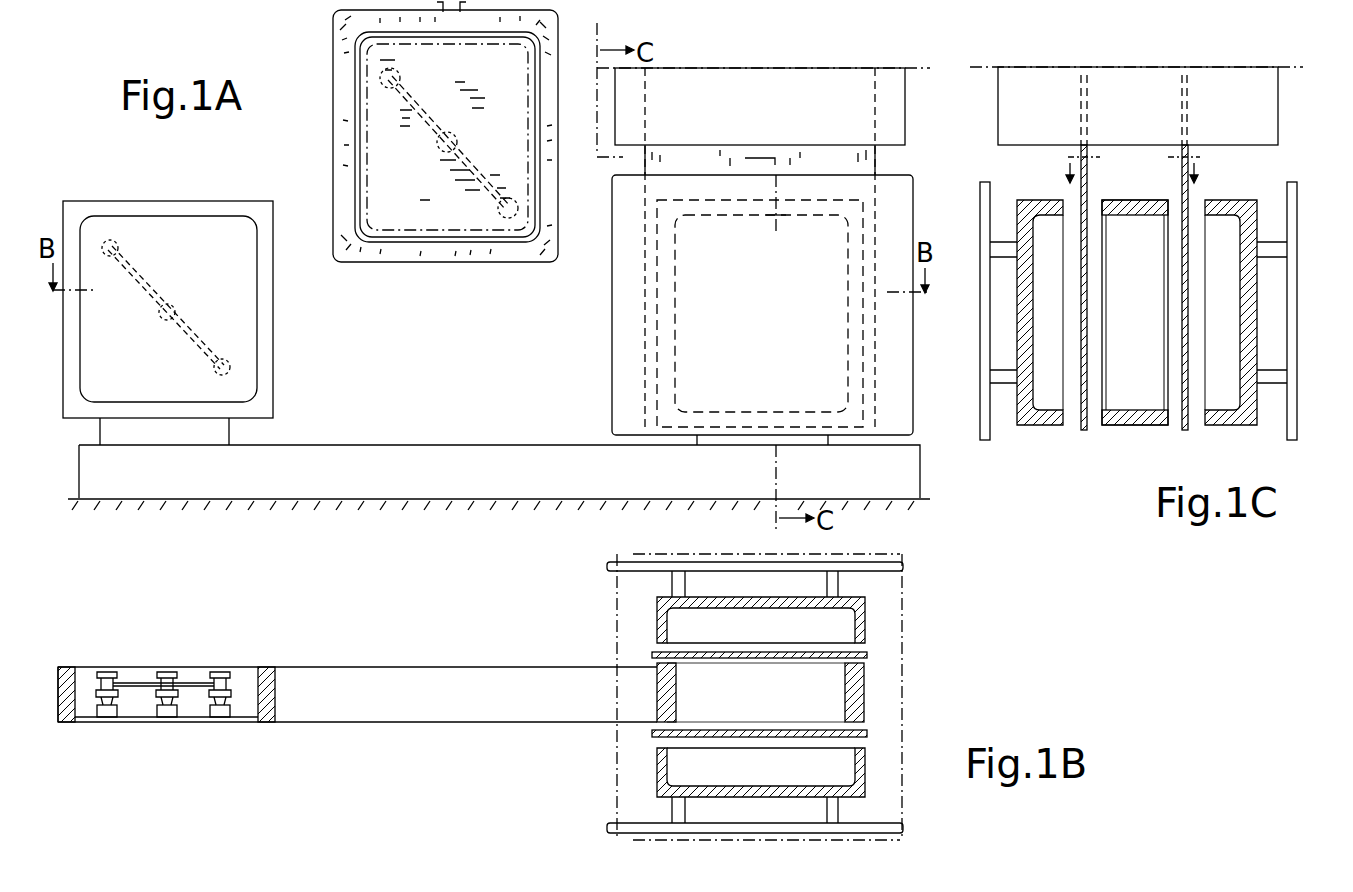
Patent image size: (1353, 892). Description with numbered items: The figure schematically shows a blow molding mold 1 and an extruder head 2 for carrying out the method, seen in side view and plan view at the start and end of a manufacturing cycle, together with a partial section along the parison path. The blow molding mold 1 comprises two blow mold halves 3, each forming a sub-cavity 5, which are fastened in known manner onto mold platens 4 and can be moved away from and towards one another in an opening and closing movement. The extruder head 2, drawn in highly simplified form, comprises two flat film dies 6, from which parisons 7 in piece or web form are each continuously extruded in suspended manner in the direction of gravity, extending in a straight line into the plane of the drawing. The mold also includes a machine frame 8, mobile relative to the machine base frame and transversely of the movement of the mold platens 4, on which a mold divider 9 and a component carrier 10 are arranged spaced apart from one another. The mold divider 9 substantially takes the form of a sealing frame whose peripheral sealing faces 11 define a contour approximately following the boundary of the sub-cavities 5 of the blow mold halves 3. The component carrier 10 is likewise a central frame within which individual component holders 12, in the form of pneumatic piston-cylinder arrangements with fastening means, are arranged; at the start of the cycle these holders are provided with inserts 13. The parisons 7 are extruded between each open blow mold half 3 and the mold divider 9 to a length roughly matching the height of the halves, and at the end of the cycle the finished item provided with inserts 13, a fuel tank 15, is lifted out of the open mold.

In FIG. 1A, the blow molding mold 1 is at (472, 517).
In FIG. 1A, the extruder head 2 is at (838, 92).
In FIG. 1C, the extruder head 2 is at (1228, 85).
In FIG. 1A, the blow mold halves 3 is at (902, 398).
In FIG. 1B, the blow mold halves 3 is at (855, 612).
In FIG. 1C, the blow mold halves 3 is at (1045, 417).
In FIG. 1B, the mold platens 4 is at (878, 568).
In FIG. 1A, the sub-cavities 5 is at (782, 338).
In FIG. 1B, the sub-cavities 5 is at (745, 617).
In FIG. 1C, the sub-cavities 5 is at (1050, 395).
In FIG. 1C, the flat film dies 6 is at (1075, 152).
In FIG. 1A, the parisons 7 is at (845, 159).
In FIG. 1B, the parisons 7 is at (742, 732).
In FIG. 1C, the parisons 7 is at (1085, 430).
In FIG. 1A, the machine frame 8 is at (367, 478).
In FIG. 1B, the machine frame 8 is at (453, 680).
In FIG. 1B, the mold divider 9 is at (855, 695).
In FIG. 1C, the mold divider 9 is at (1143, 425).
In FIG. 1A, the component carrier 10 is at (273, 338).
In FIG. 1B, the component carrier 10 is at (70, 725).
In FIG. 1B, the peripheral sealing faces 11 is at (862, 662).
In FIG. 1B, the component holders 12 is at (232, 760).
In FIG. 1B, the inserts 13 is at (224, 670).
In FIG. 1A, the fuel tank 15 is at (365, 95).